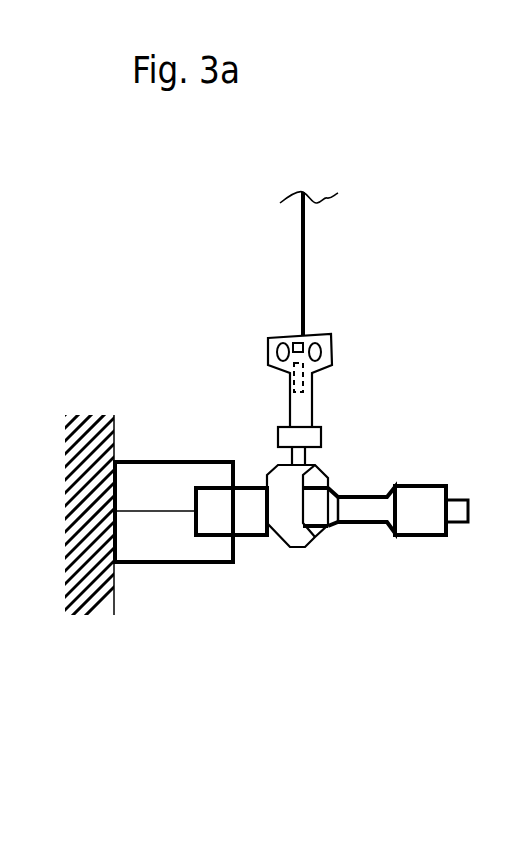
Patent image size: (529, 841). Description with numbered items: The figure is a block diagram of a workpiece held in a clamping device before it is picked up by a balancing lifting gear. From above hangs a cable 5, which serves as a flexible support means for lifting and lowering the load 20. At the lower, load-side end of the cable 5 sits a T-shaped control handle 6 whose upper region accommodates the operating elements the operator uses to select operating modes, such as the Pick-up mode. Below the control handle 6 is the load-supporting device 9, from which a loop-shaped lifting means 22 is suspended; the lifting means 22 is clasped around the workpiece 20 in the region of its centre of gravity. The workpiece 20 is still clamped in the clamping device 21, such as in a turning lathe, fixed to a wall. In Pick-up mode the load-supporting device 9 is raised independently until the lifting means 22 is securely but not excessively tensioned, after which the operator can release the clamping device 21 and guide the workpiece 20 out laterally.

The cable 5 is at (303, 232).
The control handle 6 is at (312, 383).
The load-supporting device 9 is at (297, 453).
The load 20 is at (419, 510).
The clamping device 21 is at (163, 492).
The lifting means 22 is at (293, 510).